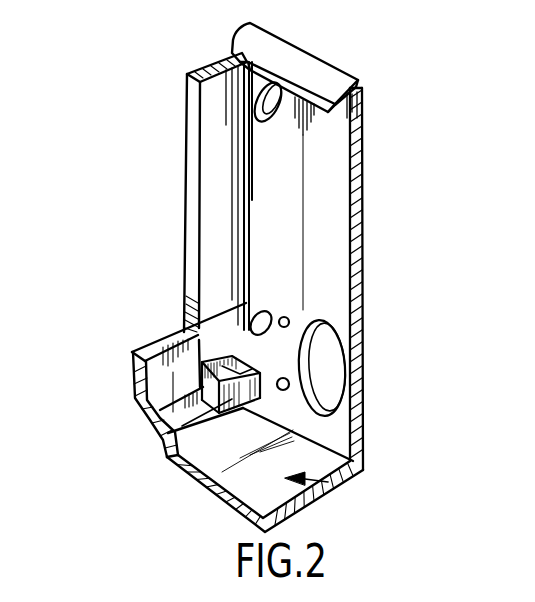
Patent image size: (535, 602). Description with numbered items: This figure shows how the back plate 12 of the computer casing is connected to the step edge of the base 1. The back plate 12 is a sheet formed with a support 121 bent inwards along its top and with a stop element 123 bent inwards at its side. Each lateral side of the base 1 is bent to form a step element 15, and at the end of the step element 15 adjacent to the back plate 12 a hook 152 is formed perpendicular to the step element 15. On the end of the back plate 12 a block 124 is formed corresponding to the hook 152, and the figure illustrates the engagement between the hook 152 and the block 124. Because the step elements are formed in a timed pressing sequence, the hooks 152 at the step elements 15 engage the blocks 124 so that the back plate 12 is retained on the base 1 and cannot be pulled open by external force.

The base 1 is at (347, 484).
The back plate 12 is at (335, 244).
The step element 15 is at (150, 369).
The support 121 is at (317, 75).
The stop element 123 is at (205, 125).
The block 124 is at (228, 410).
The hook 152 is at (208, 357).